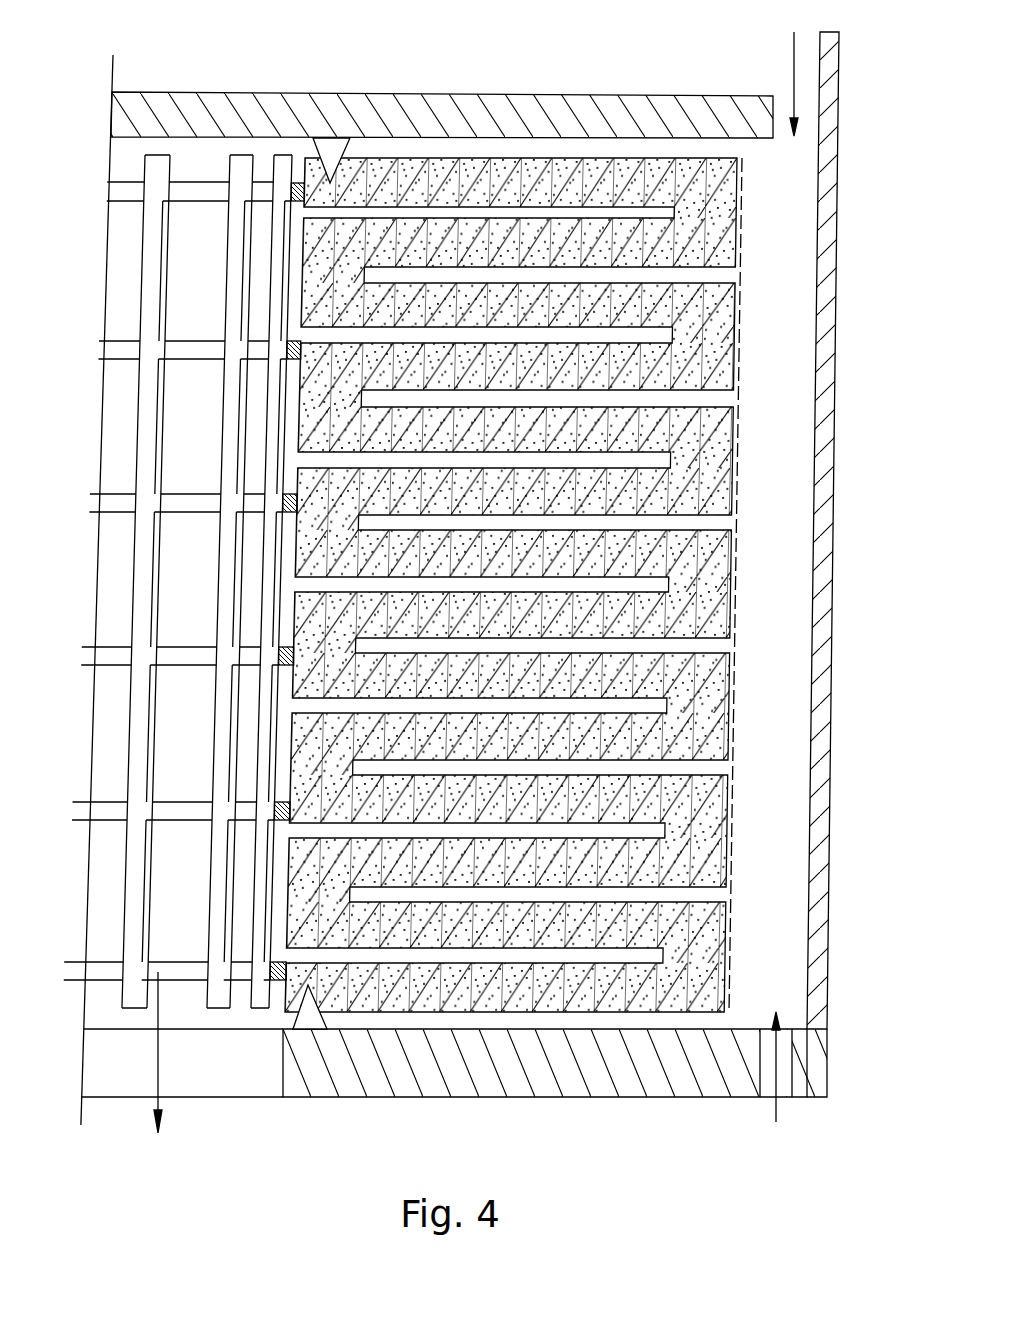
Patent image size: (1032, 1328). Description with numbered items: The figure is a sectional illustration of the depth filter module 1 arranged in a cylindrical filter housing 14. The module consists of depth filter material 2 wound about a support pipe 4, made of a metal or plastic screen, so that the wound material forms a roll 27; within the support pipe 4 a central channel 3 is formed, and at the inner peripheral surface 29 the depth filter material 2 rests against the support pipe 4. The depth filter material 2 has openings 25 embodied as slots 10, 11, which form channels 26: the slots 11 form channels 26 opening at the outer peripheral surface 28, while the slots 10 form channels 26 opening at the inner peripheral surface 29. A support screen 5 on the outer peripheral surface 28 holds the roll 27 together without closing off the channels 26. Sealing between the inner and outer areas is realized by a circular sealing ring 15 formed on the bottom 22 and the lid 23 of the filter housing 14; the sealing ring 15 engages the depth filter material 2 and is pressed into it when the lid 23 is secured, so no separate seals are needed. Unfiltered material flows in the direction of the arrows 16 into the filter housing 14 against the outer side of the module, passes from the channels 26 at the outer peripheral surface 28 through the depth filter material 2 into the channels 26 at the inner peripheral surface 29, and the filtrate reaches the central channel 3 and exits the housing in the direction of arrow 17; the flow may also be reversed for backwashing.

The depth filter module 1 is at (738, 734).
The depth filter material 2 is at (413, 170).
The central channel 3 is at (278, 1000).
The support pipe 4 is at (182, 972).
The support screen 5 is at (740, 420).
The slots 10 is at (535, 214).
The slots 11 is at (660, 275).
The filter housing 14 is at (831, 95).
The sealing ring 15 is at (330, 176).
The arrows 16 is at (793, 72).
The arrow 17 is at (158, 1053).
The bottom 22 is at (543, 1073).
The lid 23 is at (241, 108).
The openings 25 is at (726, 400).
The channels 26 is at (724, 650).
The roll 27 is at (474, 145).
The outer peripheral surface 28 is at (723, 935).
The inner peripheral surface 29 is at (292, 926).